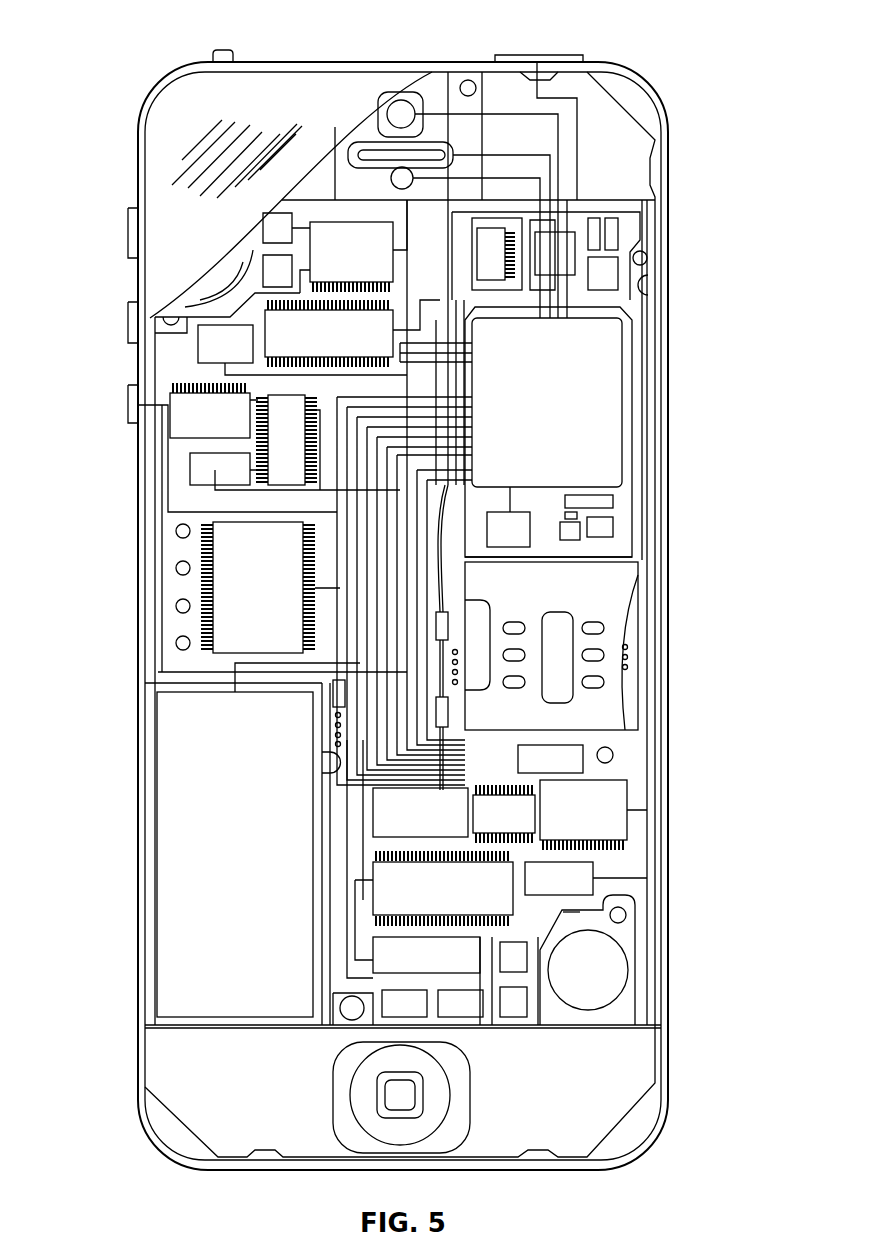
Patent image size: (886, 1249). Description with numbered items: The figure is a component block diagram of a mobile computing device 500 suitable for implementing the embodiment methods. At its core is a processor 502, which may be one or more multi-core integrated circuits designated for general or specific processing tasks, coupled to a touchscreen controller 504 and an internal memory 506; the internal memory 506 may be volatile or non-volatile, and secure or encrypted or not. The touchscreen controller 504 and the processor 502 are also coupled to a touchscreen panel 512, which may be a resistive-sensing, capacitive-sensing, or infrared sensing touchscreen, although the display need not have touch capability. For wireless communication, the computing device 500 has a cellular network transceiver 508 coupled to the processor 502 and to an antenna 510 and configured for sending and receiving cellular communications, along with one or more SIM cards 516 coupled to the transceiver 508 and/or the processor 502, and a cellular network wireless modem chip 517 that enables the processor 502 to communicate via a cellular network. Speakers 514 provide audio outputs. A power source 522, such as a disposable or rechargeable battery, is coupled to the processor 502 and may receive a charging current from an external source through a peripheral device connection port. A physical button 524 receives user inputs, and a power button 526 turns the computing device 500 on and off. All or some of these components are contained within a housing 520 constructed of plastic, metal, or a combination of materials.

The computing device 500 is at (84, 62).
The processor 502 is at (547, 380).
The touchscreen controller 504 is at (349, 246).
The internal memory 506 is at (268, 607).
The cellular network transceiver 508 is at (548, 247).
The antenna 510 is at (605, 268).
The touchscreen panel 512 is at (175, 155).
The speakers 514 is at (355, 140).
The SIM cards 516 is at (550, 759).
The cellular network wireless modem chip 517 is at (443, 888).
The housing 520 is at (670, 1050).
The power source 522 is at (235, 854).
The physical button 524 is at (412, 1100).
The power button 526 is at (538, 55).